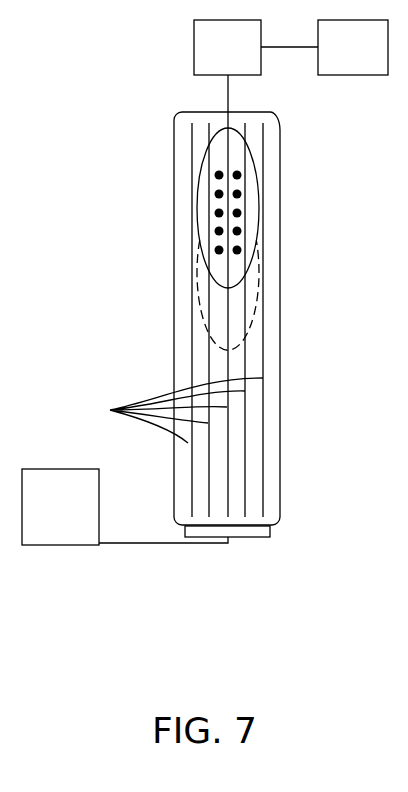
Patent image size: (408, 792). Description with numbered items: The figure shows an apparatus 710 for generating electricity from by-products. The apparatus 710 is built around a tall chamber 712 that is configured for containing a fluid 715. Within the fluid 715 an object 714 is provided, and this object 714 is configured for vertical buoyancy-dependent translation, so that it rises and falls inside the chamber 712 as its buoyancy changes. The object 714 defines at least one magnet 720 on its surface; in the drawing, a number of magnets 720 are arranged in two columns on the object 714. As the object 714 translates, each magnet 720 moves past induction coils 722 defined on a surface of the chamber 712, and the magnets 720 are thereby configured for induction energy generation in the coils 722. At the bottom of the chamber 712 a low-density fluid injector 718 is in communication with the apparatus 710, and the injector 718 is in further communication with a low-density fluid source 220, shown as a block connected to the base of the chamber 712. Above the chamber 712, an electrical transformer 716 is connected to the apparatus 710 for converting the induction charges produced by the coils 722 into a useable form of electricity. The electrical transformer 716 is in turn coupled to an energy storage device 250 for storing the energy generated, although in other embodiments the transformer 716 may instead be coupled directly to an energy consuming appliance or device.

The apparatus 710 is at (230, 319).
The chamber 712 is at (281, 268).
The object 714 is at (258, 192).
The fluid 715 is at (270, 432).
The electrical transformer 716 is at (256, 47).
The low-density fluid injector 718 is at (260, 532).
The magnet 720 is at (238, 193).
The induction coils 722 is at (162, 410).
The low-density fluid source 220 is at (125, 507).
The energy storage device 250 is at (353, 47).